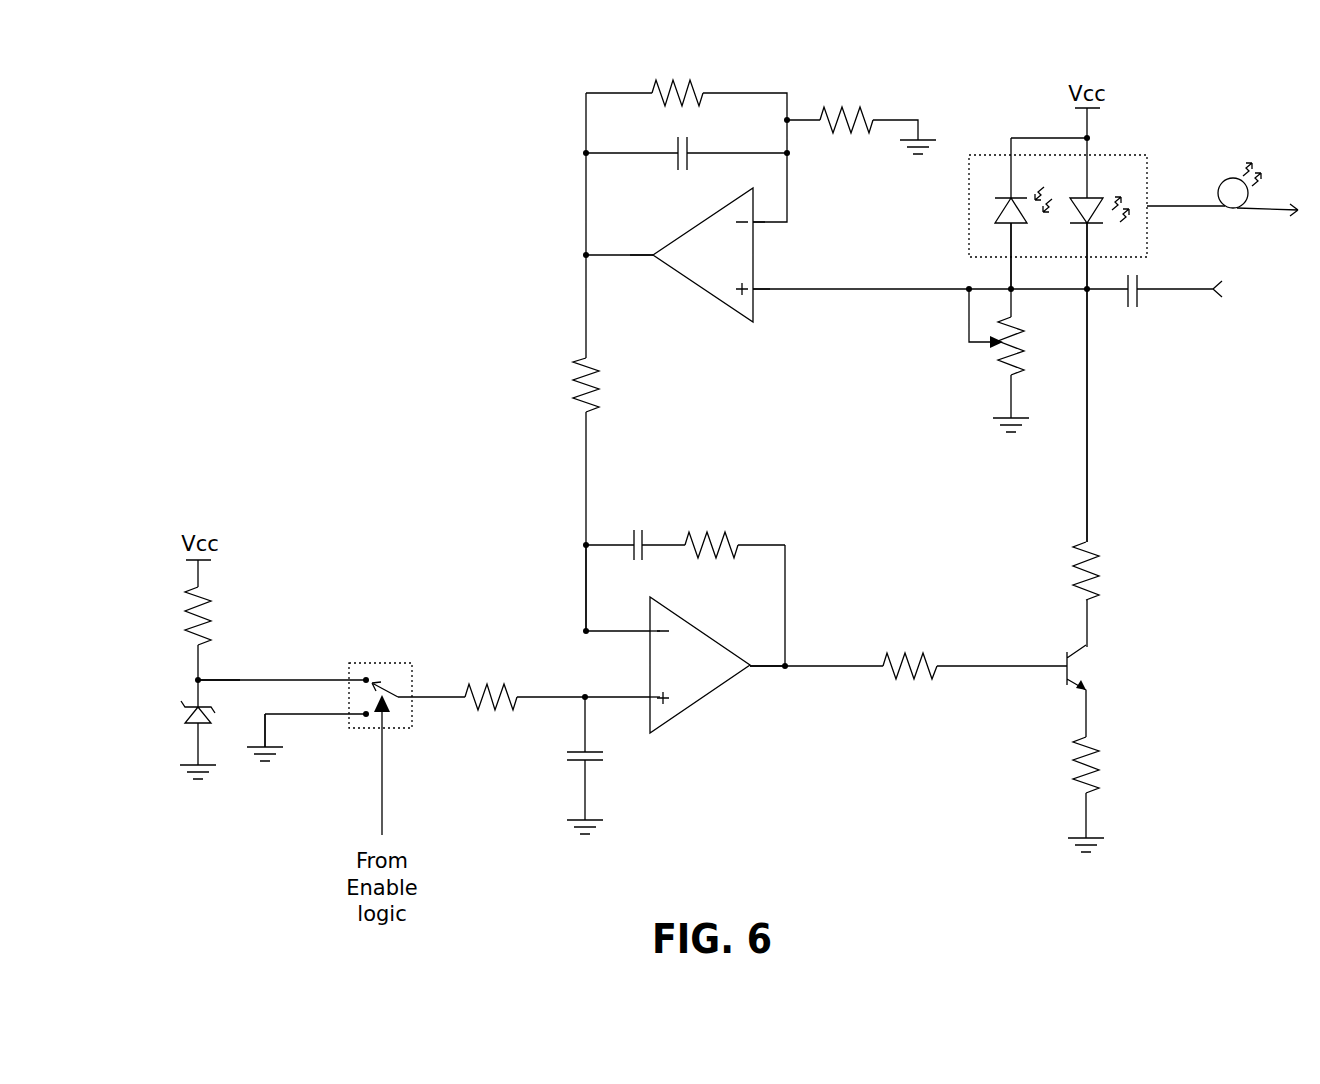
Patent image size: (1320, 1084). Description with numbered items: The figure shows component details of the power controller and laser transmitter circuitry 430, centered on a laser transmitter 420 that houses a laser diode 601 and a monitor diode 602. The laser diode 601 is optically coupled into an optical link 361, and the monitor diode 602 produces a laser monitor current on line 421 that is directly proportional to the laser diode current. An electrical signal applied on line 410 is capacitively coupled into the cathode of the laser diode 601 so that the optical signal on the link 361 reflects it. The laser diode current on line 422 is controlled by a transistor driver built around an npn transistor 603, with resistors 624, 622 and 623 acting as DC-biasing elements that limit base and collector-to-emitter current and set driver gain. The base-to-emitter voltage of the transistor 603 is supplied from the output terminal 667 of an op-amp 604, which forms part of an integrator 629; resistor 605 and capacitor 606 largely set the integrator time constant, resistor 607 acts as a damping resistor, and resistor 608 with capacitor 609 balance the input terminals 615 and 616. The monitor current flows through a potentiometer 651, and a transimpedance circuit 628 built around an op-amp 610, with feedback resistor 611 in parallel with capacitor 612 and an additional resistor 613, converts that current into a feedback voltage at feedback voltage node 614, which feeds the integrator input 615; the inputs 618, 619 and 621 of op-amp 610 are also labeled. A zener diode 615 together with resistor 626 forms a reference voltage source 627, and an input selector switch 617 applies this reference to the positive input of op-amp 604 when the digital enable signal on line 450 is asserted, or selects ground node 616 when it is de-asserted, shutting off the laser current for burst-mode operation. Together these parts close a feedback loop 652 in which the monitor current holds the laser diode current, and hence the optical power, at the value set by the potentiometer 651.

The laser control circuit 430 is at (236, 196).
The resistor 611 is at (660, 85).
The resistor 613 is at (838, 100).
The capacitor 612 is at (670, 163).
The op-amp 610 is at (697, 288).
The inverting input 619 is at (757, 227).
The non-inverting input 621 is at (757, 287).
The input node 618 is at (648, 257).
The resistor 605 is at (605, 385).
The transimpedance circuit 628 is at (725, 362).
The feedback loop 652 is at (792, 466).
The capacitor 606 is at (638, 525).
The resistor 607 is at (708, 525).
The op-amp 604 is at (715, 690).
The feedback voltage node 614 is at (575, 630).
The output terminal 667 is at (749, 660).
The capacitor 609 is at (602, 753).
The integrator 629 is at (719, 785).
The resistor 608 is at (488, 682).
The input selector switch 617 is at (370, 660).
The line 450 is at (388, 766).
The resistor 626 is at (180, 610).
The reference voltage source 627 is at (142, 677).
The zener diode 615 is at (182, 712).
The ground node 616 is at (278, 755).
The resistor 624 is at (907, 648).
The transistor 603 is at (1095, 667).
The resistor 622 is at (1097, 573).
The resistor 623 is at (1098, 762).
The line 422 is at (1090, 410).
The potentiometer 651 is at (992, 363).
The line 421 is at (1003, 275).
The laser transmitter 420 is at (1185, 163).
The monitor diode 602 is at (1007, 195).
The laser diode 601 is at (1092, 195).
The optical link 361 is at (1180, 213).
The line 410 is at (1163, 297).